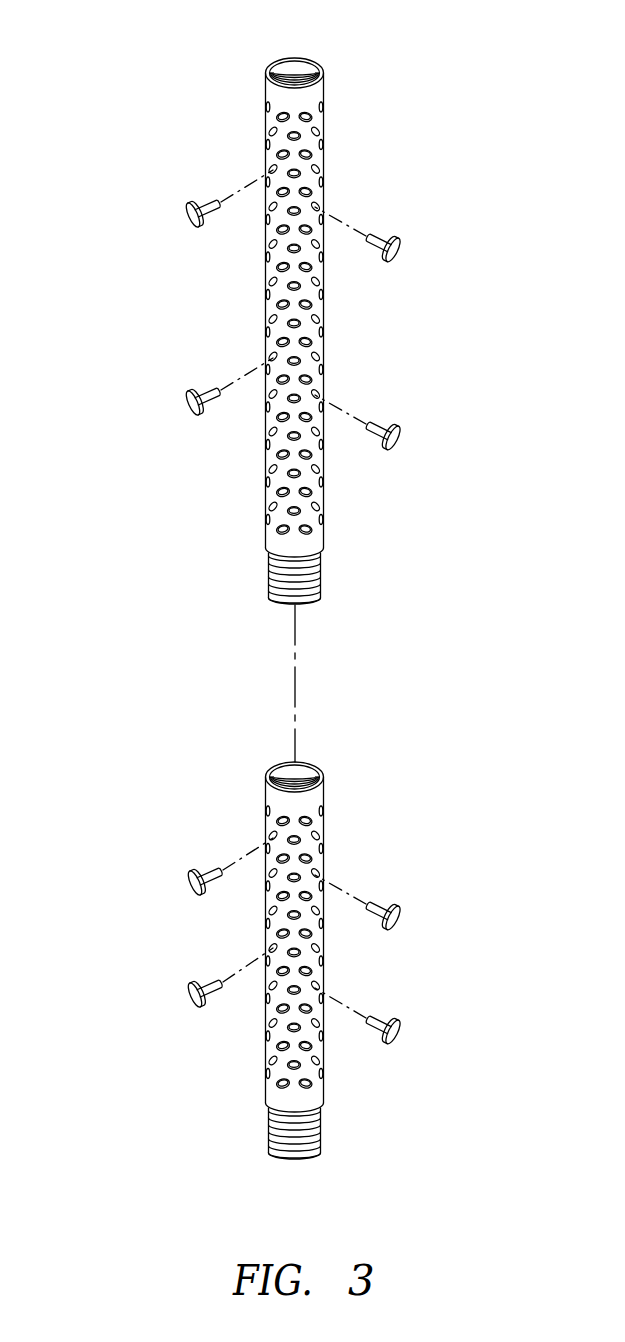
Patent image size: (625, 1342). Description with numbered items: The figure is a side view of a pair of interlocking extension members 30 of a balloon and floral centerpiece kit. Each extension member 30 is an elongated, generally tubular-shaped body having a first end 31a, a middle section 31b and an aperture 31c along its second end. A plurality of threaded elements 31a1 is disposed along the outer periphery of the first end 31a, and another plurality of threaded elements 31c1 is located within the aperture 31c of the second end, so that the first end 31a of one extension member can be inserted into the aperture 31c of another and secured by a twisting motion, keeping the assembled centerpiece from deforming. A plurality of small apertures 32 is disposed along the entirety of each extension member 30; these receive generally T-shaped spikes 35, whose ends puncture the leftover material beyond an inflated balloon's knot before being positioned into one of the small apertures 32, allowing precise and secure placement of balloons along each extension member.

The extension member 30 is at (150, 73).
The first end 31a is at (316, 597).
The threaded elements 31a1 is at (297, 582).
The middle section 31b is at (318, 306).
The aperture 31c is at (305, 62).
The threaded elements 31c1 is at (288, 74).
The small apertures 32 is at (293, 250).
The T-shaped spikes 35 is at (211, 200).